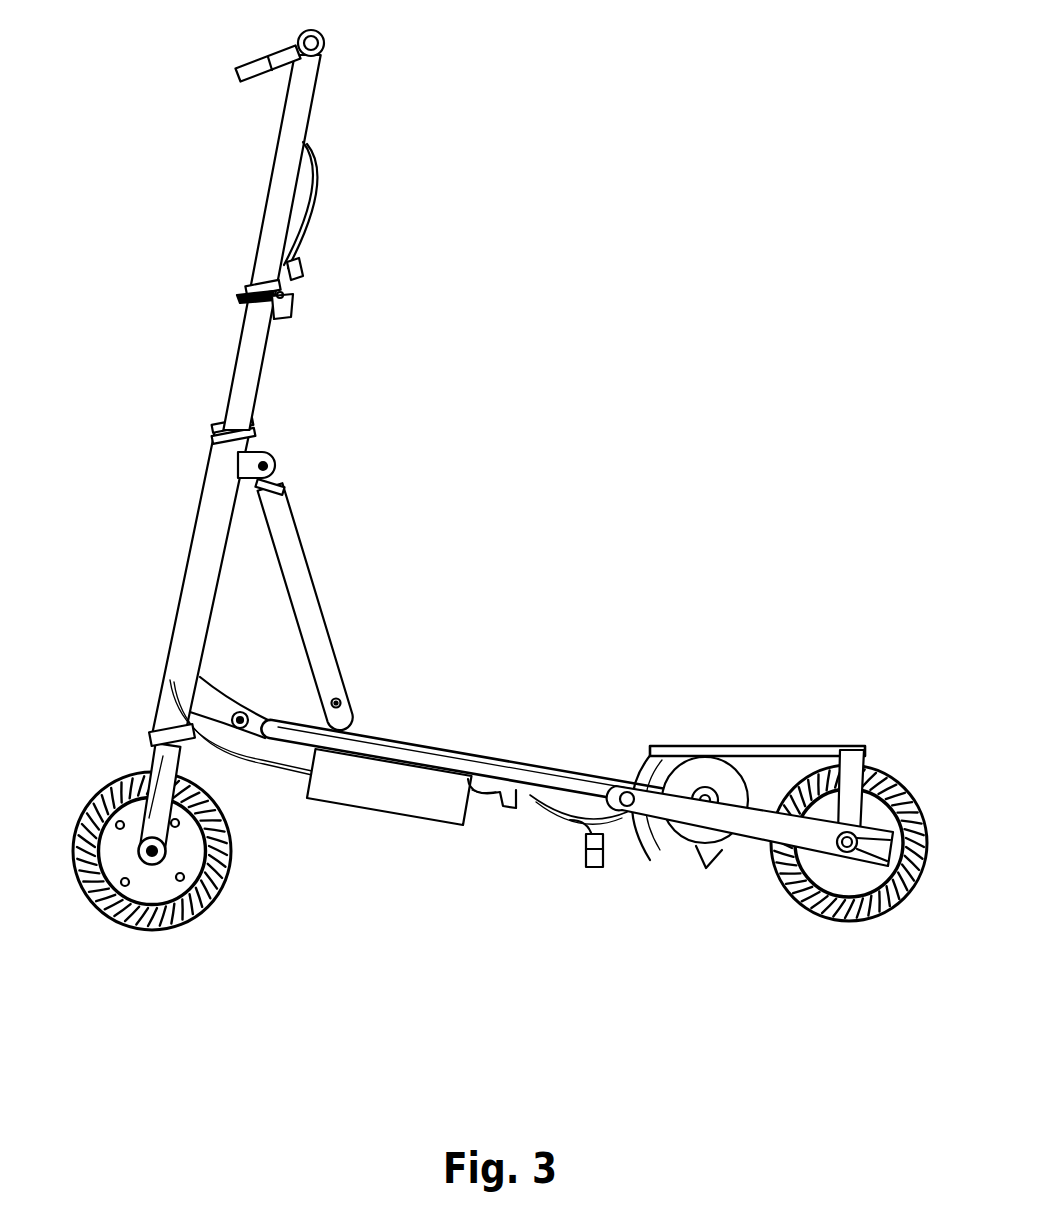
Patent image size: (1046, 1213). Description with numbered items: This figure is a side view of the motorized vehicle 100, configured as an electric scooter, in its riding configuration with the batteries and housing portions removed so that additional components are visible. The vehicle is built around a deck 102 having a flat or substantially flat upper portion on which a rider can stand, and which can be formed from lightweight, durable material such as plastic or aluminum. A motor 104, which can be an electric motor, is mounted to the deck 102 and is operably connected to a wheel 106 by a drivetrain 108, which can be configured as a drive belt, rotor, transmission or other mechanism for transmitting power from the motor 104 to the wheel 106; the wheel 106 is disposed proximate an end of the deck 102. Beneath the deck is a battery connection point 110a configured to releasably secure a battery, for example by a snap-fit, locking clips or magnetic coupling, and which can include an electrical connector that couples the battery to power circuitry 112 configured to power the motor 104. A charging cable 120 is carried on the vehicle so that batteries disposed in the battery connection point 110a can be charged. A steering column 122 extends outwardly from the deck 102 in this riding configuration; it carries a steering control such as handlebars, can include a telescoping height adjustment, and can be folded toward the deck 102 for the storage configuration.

The motorized vehicle 100 is at (500, 544).
The deck 102 is at (525, 775).
The motor 104 is at (683, 825).
The wheel 106 is at (847, 918).
The drivetrain 108 is at (752, 858).
The battery connection point 110a is at (370, 785).
The power circuitry 112 is at (502, 800).
The charging cable 120 is at (597, 868).
The steering column 122 is at (247, 393).